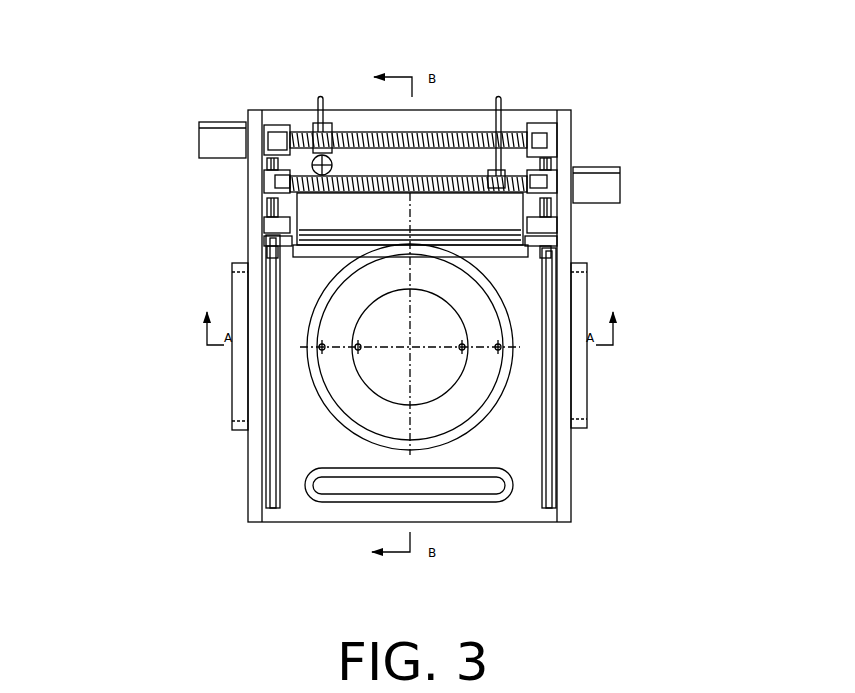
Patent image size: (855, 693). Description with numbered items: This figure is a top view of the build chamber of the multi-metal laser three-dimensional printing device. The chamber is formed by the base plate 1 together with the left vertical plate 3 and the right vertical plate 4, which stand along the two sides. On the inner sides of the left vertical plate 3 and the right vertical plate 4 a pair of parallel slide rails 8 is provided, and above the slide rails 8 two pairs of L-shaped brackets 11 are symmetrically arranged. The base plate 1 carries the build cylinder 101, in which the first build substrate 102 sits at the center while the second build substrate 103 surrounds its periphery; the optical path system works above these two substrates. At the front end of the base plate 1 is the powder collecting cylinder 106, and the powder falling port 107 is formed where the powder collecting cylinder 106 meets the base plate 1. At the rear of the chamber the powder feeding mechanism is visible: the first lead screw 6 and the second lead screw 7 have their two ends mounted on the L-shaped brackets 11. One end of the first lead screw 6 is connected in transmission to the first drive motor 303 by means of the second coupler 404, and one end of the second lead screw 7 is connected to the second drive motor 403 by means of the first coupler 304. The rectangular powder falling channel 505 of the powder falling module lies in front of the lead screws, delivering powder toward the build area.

The base plate 1 is at (309, 502).
The left vertical plate 3 is at (254, 384).
The right vertical plate 4 is at (568, 366).
The first lead screw 6 is at (439, 178).
The second lead screw 7 is at (369, 137).
The slide rail 8 is at (269, 485).
The L-shaped bracket 11 is at (266, 190).
The build cylinder 101 is at (326, 419).
The first build substrate 102 is at (437, 368).
The second build substrate 103 is at (452, 421).
The powder collecting cylinder 106 is at (458, 497).
The powder falling port 107 is at (493, 489).
The first drive motor 303 is at (206, 141).
The first coupler 304 is at (278, 143).
The second drive motor 403 is at (613, 189).
The second coupler 404 is at (549, 182).
The powder falling channel 505 is at (487, 220).